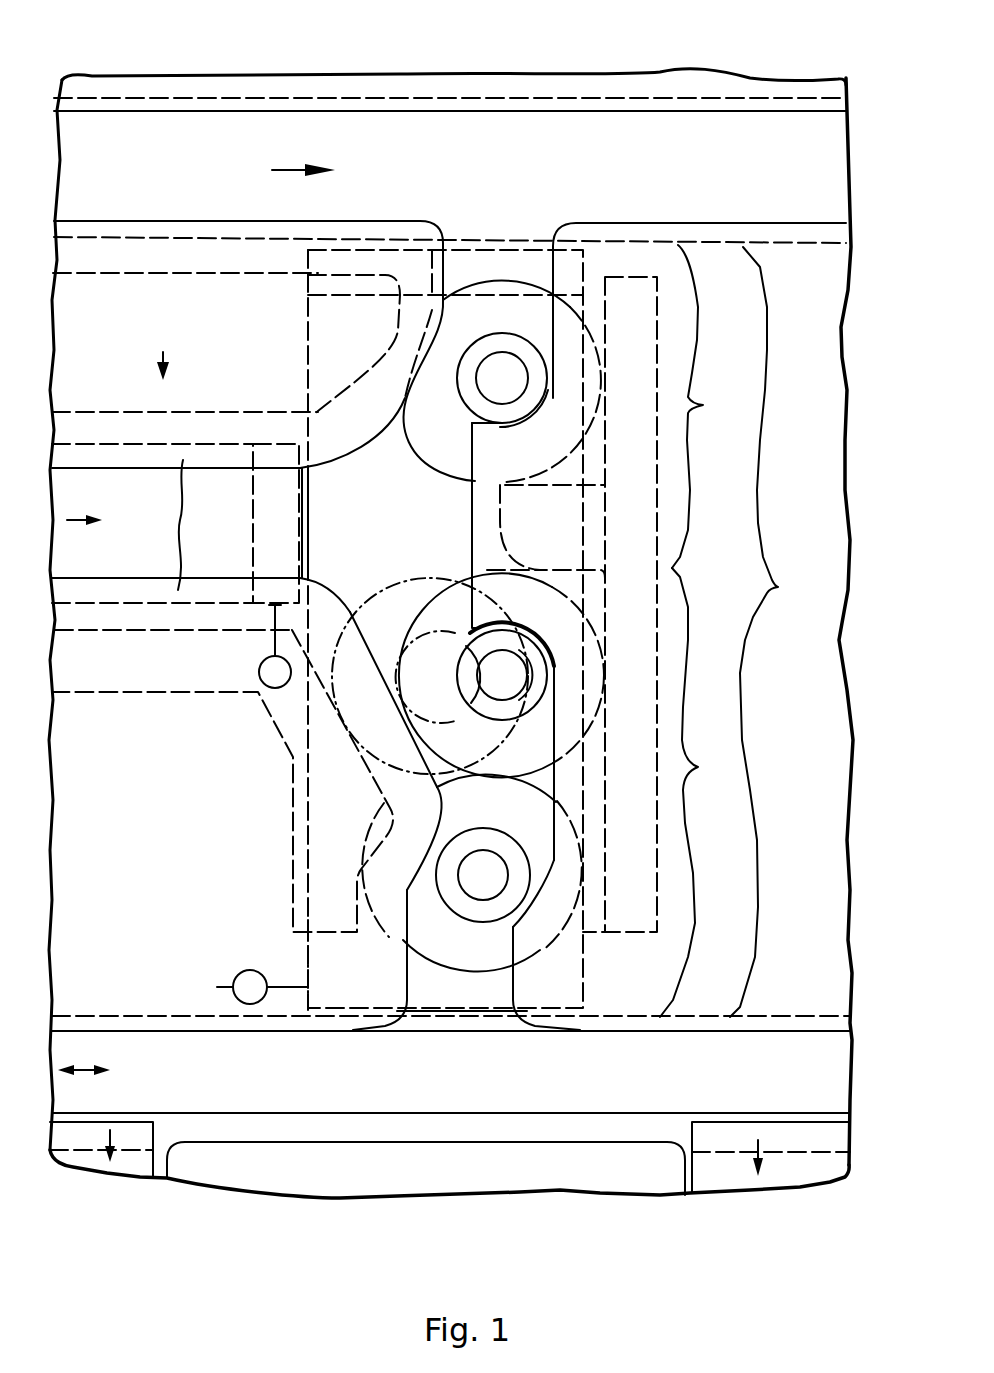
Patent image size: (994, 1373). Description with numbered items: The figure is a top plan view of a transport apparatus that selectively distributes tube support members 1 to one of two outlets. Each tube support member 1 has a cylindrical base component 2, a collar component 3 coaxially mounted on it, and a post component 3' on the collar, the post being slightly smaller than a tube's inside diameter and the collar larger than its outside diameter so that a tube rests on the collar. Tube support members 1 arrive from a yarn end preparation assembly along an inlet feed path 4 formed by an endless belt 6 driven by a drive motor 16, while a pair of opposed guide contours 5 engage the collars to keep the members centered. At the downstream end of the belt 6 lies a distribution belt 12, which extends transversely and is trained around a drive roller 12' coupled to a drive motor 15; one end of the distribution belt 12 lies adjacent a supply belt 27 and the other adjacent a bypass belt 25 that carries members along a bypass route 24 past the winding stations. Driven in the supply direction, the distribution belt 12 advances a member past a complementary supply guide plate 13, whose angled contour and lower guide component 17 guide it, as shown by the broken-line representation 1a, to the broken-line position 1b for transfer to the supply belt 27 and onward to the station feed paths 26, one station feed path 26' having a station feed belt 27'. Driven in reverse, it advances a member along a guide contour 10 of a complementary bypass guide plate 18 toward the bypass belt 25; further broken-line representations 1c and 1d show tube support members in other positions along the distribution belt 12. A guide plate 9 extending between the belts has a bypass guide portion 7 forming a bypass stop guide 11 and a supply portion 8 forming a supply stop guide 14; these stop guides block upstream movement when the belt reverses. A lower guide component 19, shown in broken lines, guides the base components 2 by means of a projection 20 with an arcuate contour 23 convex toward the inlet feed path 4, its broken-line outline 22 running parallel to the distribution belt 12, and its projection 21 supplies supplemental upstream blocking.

The tube support member 1 is at (432, 466).
The broken line schematic representation of tube support member 1a is at (366, 587).
The broken line position of tube support member 1b is at (598, 917).
The middle roller holder 1c is at (606, 656).
The upper roller holder 1d is at (606, 398).
The base component 2 is at (428, 438).
The collar component 3 is at (491, 378).
The post component 3' is at (504, 353).
The inlet feed path 4 is at (162, 352).
The guide contours 5 is at (175, 523).
The endless belt 6 is at (130, 533).
The bypass guide portion 7 is at (695, 406).
The supply portion 8 is at (688, 792).
The guide plate 9 is at (763, 632).
The guide contour 10 is at (384, 437).
The bypass stop guide 11 is at (530, 434).
The distribution belt 12 is at (445, 629).
The drive roller 12' is at (293, 965).
The complementary supply guide plate 13 is at (362, 650).
The supply stop guide 14 is at (518, 631).
The drive motor 15 is at (252, 968).
The drive motor 16 is at (259, 673).
The lower guide component 17 is at (273, 723).
The complementary bypass guide plate 18 is at (313, 337).
The lower guide component 19 is at (616, 697).
The projection 20 is at (556, 543).
The projection 21 is at (545, 483).
The slide outline 22 is at (567, 572).
The arcuate contour 23 is at (497, 527).
The bypass route 24 is at (672, 58).
The bypass belt 25 is at (414, 182).
The lower conveyor 26 is at (450, 1082).
The station feed path 26' is at (417, 1122).
The supply belt 27 is at (451, 1057).
The station feed belt 27' is at (118, 1122).